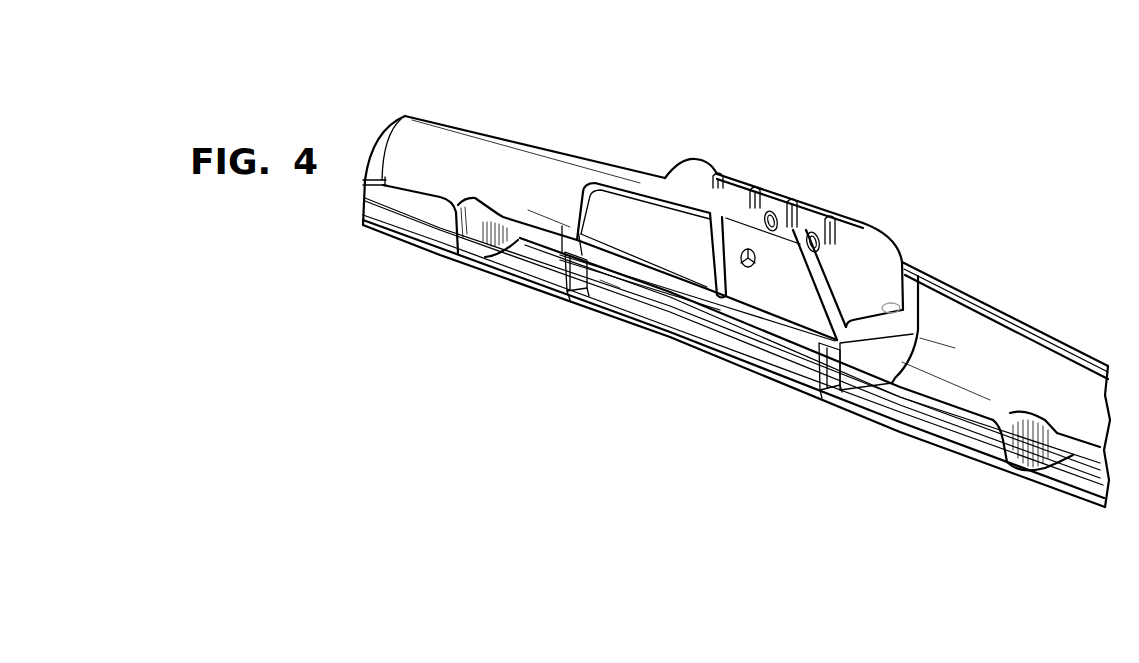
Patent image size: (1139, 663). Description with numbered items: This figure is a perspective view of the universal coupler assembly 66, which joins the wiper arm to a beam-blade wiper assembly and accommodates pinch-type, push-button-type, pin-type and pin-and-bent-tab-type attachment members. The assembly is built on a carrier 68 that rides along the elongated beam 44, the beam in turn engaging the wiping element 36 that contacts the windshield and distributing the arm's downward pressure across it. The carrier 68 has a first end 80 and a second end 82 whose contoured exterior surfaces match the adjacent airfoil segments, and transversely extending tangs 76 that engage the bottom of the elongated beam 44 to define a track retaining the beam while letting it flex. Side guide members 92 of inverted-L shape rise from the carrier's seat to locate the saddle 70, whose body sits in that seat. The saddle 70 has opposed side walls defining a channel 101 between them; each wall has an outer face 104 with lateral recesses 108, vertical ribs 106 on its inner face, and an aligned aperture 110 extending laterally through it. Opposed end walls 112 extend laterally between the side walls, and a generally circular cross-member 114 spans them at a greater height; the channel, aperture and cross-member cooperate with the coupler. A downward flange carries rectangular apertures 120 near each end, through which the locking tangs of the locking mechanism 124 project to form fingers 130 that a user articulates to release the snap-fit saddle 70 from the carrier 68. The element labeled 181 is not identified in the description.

The wiping element 36 is at (1045, 497).
The elongated beam 44 is at (970, 440).
The universal coupler assembly 66 is at (902, 216).
The carrier 68 is at (1025, 318).
The saddle 70 is at (718, 160).
The transversely extending tangs 76 is at (475, 240).
The first end 80 is at (424, 138).
The second end 82 is at (1072, 385).
The side guide members 92 is at (865, 367).
The channel 101 is at (884, 260).
The outer face 104 is at (703, 298).
The ribs 106 is at (832, 222).
The recesses 108 is at (648, 243).
The aperture 110 is at (818, 246).
The end walls 112 is at (888, 312).
The cross-member 114 is at (769, 292).
The apertures 120 is at (577, 287).
The locking mechanism 124 is at (575, 243).
The finger 130 is at (566, 273).
The flange edge 181 is at (610, 286).